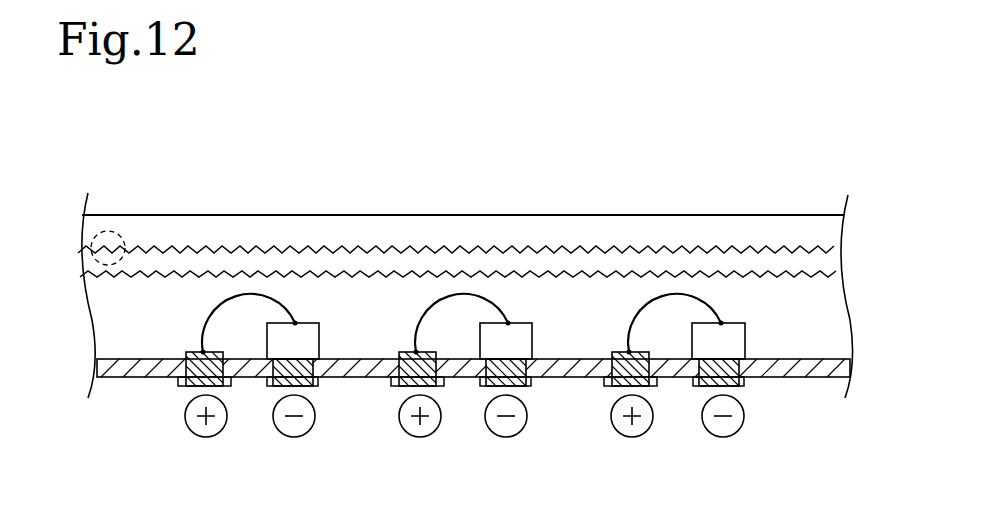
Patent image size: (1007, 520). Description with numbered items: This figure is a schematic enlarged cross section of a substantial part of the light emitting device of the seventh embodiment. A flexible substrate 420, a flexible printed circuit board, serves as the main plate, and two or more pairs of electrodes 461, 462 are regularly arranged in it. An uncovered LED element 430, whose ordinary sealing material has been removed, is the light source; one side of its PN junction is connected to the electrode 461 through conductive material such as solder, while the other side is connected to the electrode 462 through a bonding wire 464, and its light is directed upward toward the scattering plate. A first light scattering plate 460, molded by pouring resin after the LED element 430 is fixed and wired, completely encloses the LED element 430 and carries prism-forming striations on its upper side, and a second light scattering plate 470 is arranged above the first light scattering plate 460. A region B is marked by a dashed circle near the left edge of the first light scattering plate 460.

The flexible substrate 420 is at (822, 379).
The LED element 430 is at (316, 333).
The first light scattering plate 460 is at (108, 312).
The electrode 461 is at (266, 387).
The electrode 462 is at (180, 387).
The bonding wire 464 is at (257, 294).
The second light scattering plate 470 is at (180, 215).
The region B is at (111, 232).